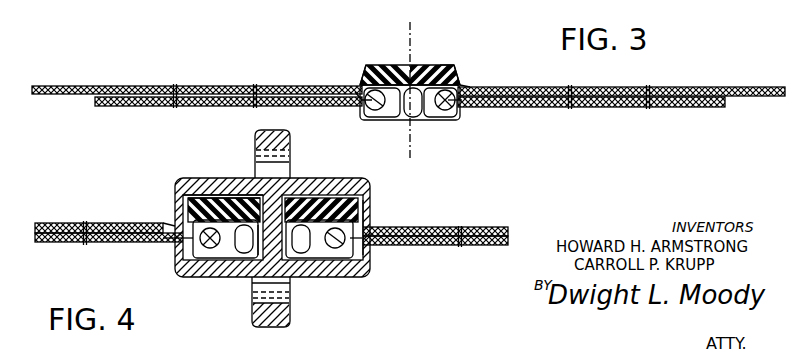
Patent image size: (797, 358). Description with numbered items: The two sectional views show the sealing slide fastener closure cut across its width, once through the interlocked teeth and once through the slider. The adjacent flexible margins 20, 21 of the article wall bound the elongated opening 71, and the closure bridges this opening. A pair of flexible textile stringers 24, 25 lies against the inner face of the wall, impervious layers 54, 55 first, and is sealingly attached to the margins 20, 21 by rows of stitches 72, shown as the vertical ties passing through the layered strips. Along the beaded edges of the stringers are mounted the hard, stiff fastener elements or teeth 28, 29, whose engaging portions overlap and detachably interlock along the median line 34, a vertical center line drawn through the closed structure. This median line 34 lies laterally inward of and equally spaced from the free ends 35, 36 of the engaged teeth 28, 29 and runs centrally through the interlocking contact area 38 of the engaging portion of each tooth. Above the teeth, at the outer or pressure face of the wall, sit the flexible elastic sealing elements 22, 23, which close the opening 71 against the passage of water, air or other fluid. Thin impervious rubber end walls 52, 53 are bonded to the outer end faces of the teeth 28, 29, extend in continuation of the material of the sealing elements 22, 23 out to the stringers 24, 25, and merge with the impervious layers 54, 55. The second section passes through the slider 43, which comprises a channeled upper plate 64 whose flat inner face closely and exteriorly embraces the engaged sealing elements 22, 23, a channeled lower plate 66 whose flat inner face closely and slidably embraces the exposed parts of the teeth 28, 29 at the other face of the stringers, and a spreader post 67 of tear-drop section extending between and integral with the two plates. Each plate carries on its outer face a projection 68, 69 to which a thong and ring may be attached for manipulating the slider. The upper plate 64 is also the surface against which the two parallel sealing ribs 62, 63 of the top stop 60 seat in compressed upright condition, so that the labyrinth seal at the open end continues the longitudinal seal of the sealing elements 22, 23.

In FIG. 3, the flexible margin 20 is at (80, 88).
In FIG. 4, the flexible margin 20 is at (62, 224).
In FIG. 3, the flexible margin 21 is at (762, 90).
In FIG. 4, the flexible margin 21 is at (505, 228).
In FIG. 3, the sealing element 22 is at (382, 65).
In FIG. 3, the sealing element 23 is at (445, 65).
In FIG. 3, the stringer 24 is at (105, 104).
In FIG. 4, the stringer 24 is at (75, 242).
In FIG. 3, the stringer 25 is at (710, 106).
In FIG. 4, the stringer 25 is at (473, 245).
In FIG. 3, the fastener element 28 is at (366, 118).
In FIG. 4, the fastener element 28 is at (215, 260).
In FIG. 3, the fastener element 29 is at (455, 118).
In FIG. 4, the fastener element 29 is at (330, 262).
In FIG. 3, the median line 34 is at (420, 148).
In FIG. 3, the free end 35 is at (392, 118).
In FIG. 3, the free end 36 is at (434, 118).
In FIG. 3, the interlocking contact area 38 is at (408, 118).
In FIG. 4, the slider 43 is at (372, 196).
In FIG. 3, the end wall 52 is at (360, 86).
In FIG. 3, the end wall 53 is at (470, 88).
In FIG. 3, the impervious layer 54 is at (352, 98).
In FIG. 4, the impervious layer 54 is at (180, 236).
In FIG. 3, the impervious layer 55 is at (490, 98).
In FIG. 4, the impervious layer 55 is at (385, 236).
In FIG. 4, the top stop 60 is at (366, 210).
In FIG. 4, the sealing rib 62 is at (247, 178).
In FIG. 4, the sealing rib 63 is at (192, 180).
In FIG. 4, the channeled upper plate 64 is at (212, 180).
In FIG. 4, the channeled lower plate 66 is at (233, 280).
In FIG. 4, the spreader post 67 is at (288, 285).
In FIG. 4, the projection 68 is at (275, 148).
In FIG. 4, the projection 69 is at (278, 322).
In FIG. 3, the elongated opening 71 is at (478, 95).
In FIG. 4, the elongated opening 71 is at (170, 225).
In FIG. 3, the row of stitches 72 is at (255, 86).
In FIG. 4, the row of stitches 72 is at (85, 222).